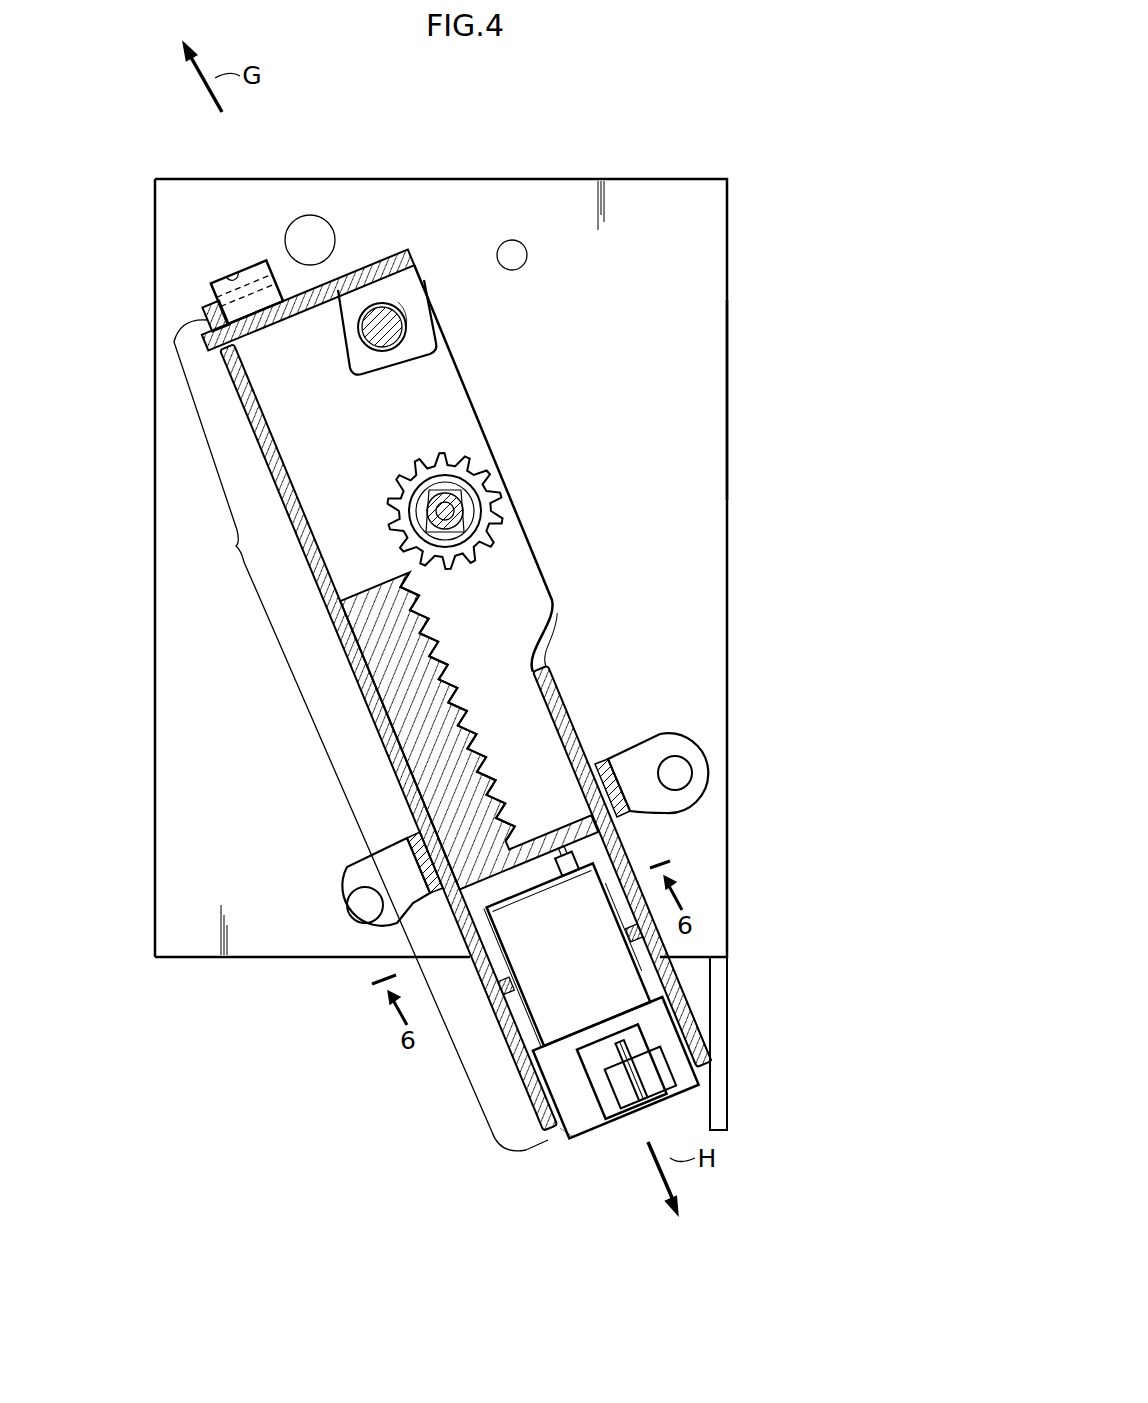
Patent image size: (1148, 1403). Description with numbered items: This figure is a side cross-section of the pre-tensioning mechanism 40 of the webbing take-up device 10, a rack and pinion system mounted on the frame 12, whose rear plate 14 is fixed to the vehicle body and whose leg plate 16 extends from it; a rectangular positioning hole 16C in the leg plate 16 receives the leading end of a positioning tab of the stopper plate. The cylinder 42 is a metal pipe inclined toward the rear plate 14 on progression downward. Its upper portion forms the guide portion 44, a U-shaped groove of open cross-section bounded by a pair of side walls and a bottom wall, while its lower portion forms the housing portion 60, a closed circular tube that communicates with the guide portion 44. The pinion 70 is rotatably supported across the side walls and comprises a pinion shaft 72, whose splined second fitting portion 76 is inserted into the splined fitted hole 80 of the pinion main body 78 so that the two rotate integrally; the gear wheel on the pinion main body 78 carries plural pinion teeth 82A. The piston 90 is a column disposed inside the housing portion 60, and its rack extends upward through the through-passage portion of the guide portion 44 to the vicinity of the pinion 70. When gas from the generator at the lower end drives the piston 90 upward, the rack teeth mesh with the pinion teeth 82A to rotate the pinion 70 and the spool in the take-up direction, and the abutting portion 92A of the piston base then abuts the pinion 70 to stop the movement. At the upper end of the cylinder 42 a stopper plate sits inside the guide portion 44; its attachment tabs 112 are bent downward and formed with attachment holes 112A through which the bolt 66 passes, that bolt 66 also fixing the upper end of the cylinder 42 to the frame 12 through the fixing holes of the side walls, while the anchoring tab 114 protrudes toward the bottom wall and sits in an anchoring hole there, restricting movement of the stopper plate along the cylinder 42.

The webbing take-up device 10 is at (609, 115).
The frame 12 is at (698, 179).
The rear plate 14 is at (729, 385).
The leg plate 16 is at (515, 178).
The positioning hole 16C is at (232, 270).
The pre-tensioning mechanism 40 is at (430, 1134).
The cylinder 42 is at (692, 1016).
The guide portion 44 is at (236, 548).
The housing portion 60 is at (340, 930).
The bolt 66 is at (395, 325).
The pinion 70 is at (521, 514).
The pinion shaft 72 is at (465, 532).
The second fitting portion 76 is at (462, 555).
The pinion main body 78 is at (497, 478).
The fitted hole 80 is at (478, 512).
The pinion teeth 82A is at (468, 460).
The piston 90 is at (366, 599).
The abutting portion 92A is at (620, 812).
The attachment tab 112 is at (446, 291).
The attachment hole 112A is at (398, 307).
The anchoring tab 114 is at (205, 326).